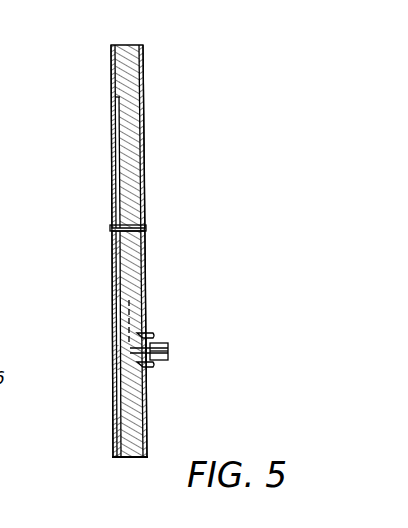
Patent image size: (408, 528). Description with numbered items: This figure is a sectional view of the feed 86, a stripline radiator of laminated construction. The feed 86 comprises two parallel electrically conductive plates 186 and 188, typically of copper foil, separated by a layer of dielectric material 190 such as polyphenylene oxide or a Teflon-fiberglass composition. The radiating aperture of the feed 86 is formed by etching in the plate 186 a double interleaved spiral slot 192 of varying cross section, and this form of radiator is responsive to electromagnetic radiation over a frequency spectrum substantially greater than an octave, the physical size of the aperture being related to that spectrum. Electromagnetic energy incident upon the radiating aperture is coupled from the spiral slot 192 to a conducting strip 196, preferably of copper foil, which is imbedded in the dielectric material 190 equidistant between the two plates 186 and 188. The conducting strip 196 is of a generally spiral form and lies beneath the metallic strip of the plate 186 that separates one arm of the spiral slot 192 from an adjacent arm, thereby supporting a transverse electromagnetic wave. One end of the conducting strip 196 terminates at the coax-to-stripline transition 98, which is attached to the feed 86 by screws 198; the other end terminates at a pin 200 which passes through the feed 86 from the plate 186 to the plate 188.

The feed 86 is at (90, 249).
The coax-to-stripline transition 98 is at (160, 347).
The electrically conductive plate 186 is at (113, 418).
The electrically conductive plate 188 is at (147, 428).
The layer of dielectric material 190 is at (127, 458).
The double interleaved spiral slot 192 is at (112, 121).
The conducting strip 196 is at (139, 247).
The screws 198 is at (150, 364).
The pin 200 is at (140, 230).